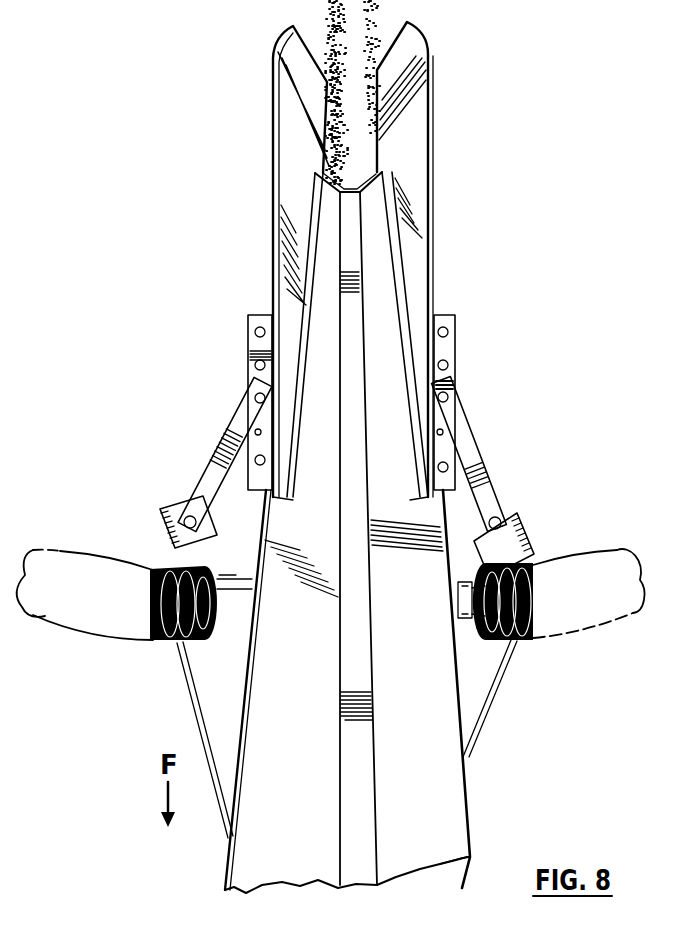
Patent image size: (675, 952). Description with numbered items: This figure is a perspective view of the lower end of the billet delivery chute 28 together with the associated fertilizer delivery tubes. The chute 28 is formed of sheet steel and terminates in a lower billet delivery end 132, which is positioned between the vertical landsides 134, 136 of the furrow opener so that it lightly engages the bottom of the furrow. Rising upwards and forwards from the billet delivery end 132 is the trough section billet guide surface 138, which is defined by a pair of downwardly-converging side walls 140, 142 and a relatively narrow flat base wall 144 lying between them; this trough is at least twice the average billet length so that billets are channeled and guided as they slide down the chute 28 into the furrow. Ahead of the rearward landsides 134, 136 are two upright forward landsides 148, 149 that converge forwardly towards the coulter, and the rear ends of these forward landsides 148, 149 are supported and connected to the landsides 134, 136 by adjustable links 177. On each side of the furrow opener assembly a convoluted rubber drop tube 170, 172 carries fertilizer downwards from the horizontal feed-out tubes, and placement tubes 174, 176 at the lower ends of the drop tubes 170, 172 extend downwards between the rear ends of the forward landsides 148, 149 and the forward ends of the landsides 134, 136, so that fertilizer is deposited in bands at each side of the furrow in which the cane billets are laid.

The billet delivery chute 28 is at (461, 884).
The lower billet delivery end 132 is at (392, 175).
The vertical landside 134 is at (432, 100).
The vertical landside 136 is at (273, 79).
The trough section billet guide surface 138 is at (303, 560).
The side wall 140 is at (457, 783).
The side wall 142 is at (253, 849).
The flat base wall 144 is at (365, 792).
The forward landside 148 is at (492, 682).
The forward landside 149 is at (193, 686).
The convoluted rubber drop tube 170 is at (563, 565).
The convoluted rubber drop tube 172 is at (100, 578).
The placement tube 174 is at (493, 480).
The placement tube 176 is at (247, 560).
The adjustable link 177 is at (240, 412).